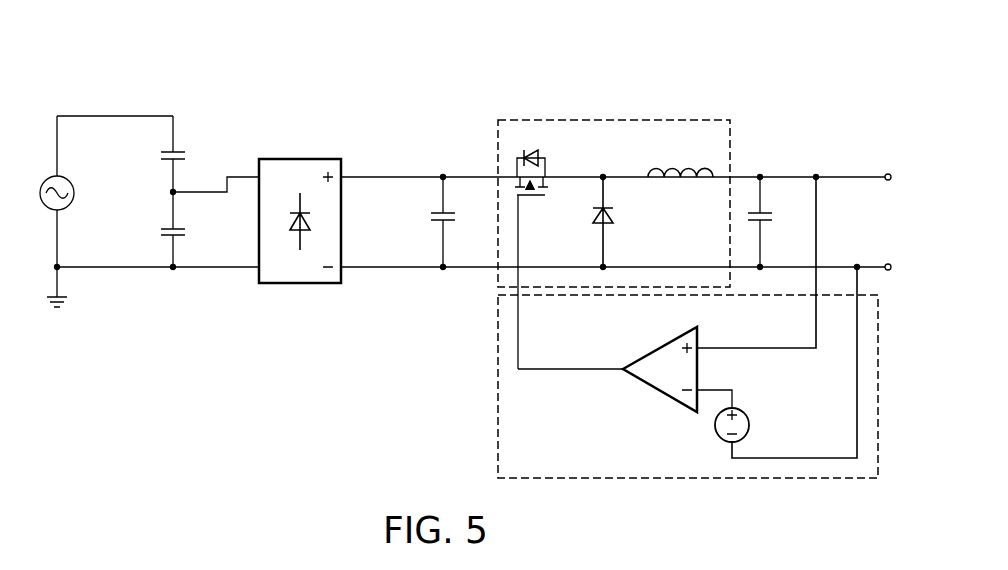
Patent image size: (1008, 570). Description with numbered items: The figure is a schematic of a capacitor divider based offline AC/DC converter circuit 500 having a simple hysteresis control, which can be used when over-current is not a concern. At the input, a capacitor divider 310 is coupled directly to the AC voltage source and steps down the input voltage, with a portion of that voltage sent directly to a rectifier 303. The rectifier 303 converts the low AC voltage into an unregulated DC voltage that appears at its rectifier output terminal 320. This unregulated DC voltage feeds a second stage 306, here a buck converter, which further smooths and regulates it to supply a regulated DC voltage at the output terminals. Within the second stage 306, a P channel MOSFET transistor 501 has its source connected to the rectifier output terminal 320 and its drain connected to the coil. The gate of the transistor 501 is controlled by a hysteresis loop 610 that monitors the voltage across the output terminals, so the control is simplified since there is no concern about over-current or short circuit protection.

The circuit 500 is at (762, 99).
The capacitor divider 310 is at (172, 99).
The rectifier 303 is at (280, 283).
The rectifier output terminal 320 is at (377, 177).
The second stage 306 is at (623, 120).
The transistor 501 is at (545, 165).
The hysteresis loop 610 is at (498, 425).